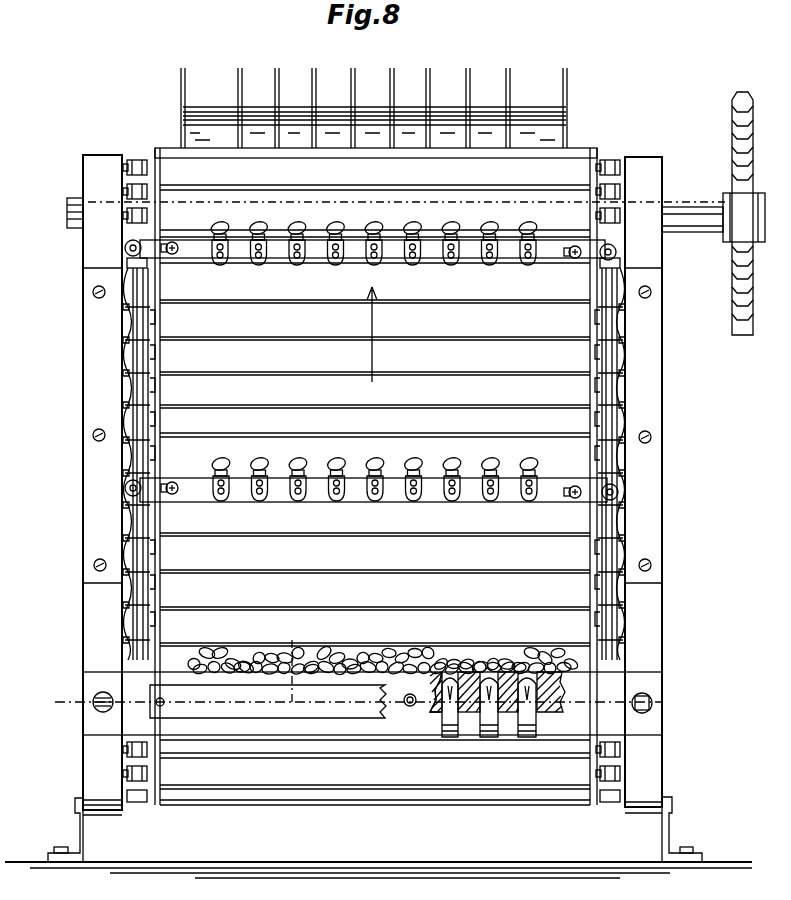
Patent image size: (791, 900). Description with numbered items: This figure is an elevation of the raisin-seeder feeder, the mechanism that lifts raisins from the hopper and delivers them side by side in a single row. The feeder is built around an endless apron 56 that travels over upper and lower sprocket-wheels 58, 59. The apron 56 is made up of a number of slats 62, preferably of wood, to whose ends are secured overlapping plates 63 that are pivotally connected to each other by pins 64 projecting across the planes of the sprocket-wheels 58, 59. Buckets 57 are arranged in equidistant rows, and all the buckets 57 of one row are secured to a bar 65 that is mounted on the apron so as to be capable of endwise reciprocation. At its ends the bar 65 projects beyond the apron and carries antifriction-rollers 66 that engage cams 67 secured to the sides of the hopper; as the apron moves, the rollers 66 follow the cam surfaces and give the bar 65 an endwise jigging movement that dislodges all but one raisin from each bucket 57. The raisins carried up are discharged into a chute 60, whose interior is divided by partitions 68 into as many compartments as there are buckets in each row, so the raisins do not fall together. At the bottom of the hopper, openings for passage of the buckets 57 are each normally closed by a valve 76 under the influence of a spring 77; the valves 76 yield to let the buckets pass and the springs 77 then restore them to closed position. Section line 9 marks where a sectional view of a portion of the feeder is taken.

The section line 9 9 is at (72, 672).
The endless apron 56 is at (128, 414).
The buckets 57 is at (230, 238).
The sprocket-wheel 58 is at (135, 190).
The sprocket-wheel 59 is at (135, 780).
The chute 60 is at (533, 140).
The slats 62 is at (375, 487).
The overlapping plates 63 is at (152, 323).
The pins 64 is at (135, 377).
The bar 65 is at (465, 260).
The antifriction-rollers 66 is at (616, 246).
The cams 67 is at (128, 452).
The partitions 68 is at (357, 82).
The valve 76 is at (492, 715).
The spring 77 is at (404, 701).